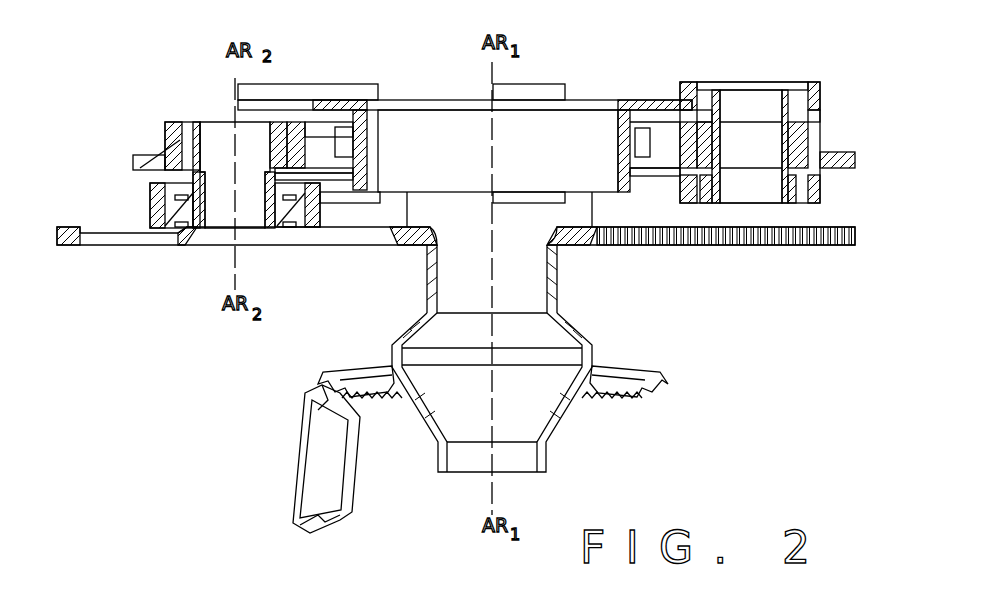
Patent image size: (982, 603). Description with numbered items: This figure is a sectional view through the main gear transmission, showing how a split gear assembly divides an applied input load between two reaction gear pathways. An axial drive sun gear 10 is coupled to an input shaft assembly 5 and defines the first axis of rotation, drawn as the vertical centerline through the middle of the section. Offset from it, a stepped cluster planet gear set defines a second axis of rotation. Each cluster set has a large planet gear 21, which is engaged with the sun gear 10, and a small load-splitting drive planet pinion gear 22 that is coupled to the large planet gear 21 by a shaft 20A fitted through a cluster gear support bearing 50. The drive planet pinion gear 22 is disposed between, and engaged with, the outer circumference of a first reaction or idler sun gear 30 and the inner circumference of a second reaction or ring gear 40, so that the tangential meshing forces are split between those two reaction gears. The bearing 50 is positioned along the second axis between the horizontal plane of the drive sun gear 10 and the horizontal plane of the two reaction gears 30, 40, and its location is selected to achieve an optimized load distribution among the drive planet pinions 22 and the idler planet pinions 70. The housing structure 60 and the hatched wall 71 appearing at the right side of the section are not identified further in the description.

The input shaft assembly 5 is at (598, 420).
The drive sun gear 10 is at (415, 240).
The large planet gear 21 is at (85, 246).
The shaft 20A is at (262, 197).
The drive planet pinion gear 22 is at (233, 140).
The idler sun gear 30 is at (280, 150).
The ring gear 40 is at (173, 140).
The cluster gear support bearing 50 is at (187, 210).
The main housing 60 is at (648, 103).
The idler planet pinion 70 is at (760, 144).
The housing wall 71 is at (707, 143).